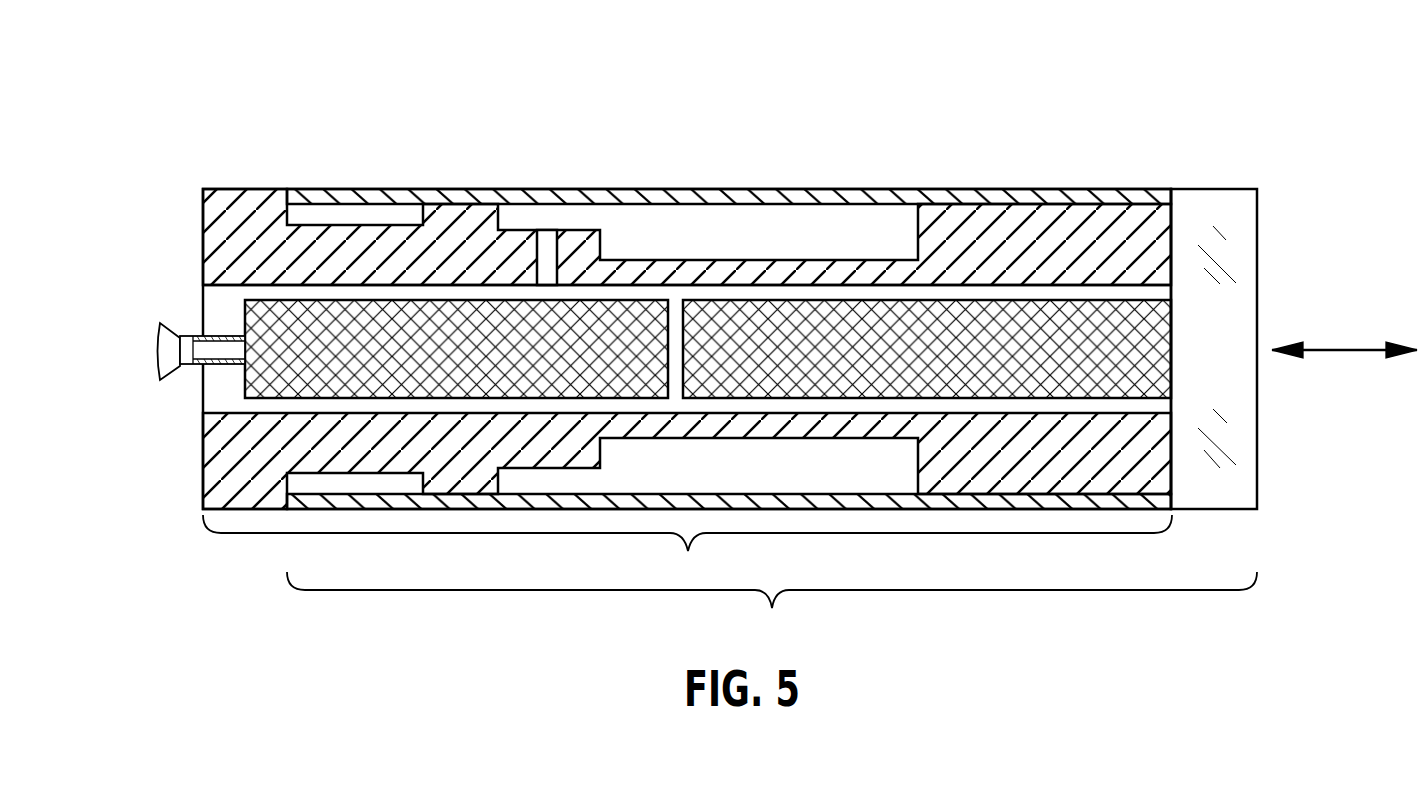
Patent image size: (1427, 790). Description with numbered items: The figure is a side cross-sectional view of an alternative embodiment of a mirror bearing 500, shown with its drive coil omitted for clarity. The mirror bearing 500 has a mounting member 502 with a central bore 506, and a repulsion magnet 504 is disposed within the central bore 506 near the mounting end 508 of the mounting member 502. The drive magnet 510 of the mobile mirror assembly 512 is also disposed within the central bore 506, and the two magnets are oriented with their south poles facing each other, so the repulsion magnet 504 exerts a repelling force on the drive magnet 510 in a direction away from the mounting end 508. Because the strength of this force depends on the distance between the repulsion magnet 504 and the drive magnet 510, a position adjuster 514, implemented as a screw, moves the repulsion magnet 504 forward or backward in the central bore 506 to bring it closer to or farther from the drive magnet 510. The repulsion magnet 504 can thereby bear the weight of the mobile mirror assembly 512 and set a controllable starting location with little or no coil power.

The mirror bearing 500 is at (955, 107).
The mounting member 502 is at (687, 548).
The repulsion magnet 504 is at (252, 388).
The central bore 506 is at (218, 305).
The mounting end 508 is at (202, 215).
The drive magnet 510 is at (760, 327).
The mobile mirror assembly 512 is at (772, 605).
The position adjuster 514 is at (158, 350).